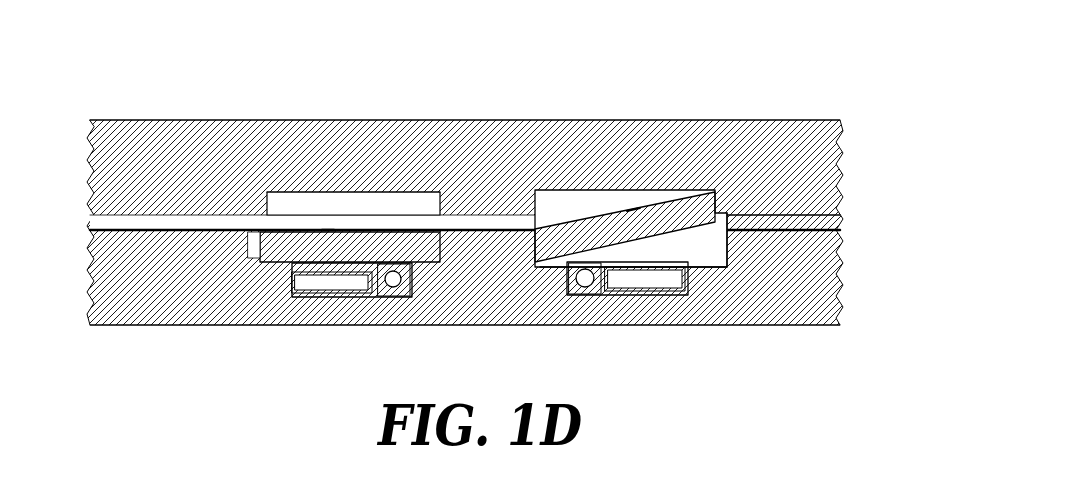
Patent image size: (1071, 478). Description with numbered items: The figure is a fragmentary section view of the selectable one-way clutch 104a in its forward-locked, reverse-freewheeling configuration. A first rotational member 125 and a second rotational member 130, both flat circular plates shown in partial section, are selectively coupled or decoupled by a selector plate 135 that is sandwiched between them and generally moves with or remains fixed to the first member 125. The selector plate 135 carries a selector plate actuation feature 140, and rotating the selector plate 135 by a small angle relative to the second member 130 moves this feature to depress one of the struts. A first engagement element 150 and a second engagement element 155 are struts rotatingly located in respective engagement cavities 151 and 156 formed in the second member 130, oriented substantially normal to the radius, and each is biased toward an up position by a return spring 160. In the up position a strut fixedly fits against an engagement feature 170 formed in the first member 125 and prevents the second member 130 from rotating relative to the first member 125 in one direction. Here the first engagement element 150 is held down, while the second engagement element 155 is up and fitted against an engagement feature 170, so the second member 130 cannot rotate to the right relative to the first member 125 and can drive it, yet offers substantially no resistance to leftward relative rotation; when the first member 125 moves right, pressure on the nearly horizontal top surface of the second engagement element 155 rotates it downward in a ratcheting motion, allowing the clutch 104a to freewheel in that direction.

The selectable one-way clutch 104a is at (140, 60).
The first rotational member 125 is at (845, 273).
The second rotational member 130 is at (845, 168).
The selector plate 135 is at (137, 223).
The selector plate actuation feature 140 is at (388, 213).
The first engagement element 150 is at (329, 227).
The engagement cavity 151 is at (256, 261).
The second engagement element 155 is at (641, 205).
The engagement cavity 156 is at (712, 262).
The return spring 160 is at (381, 303).
The engagement feature 170 is at (338, 192).